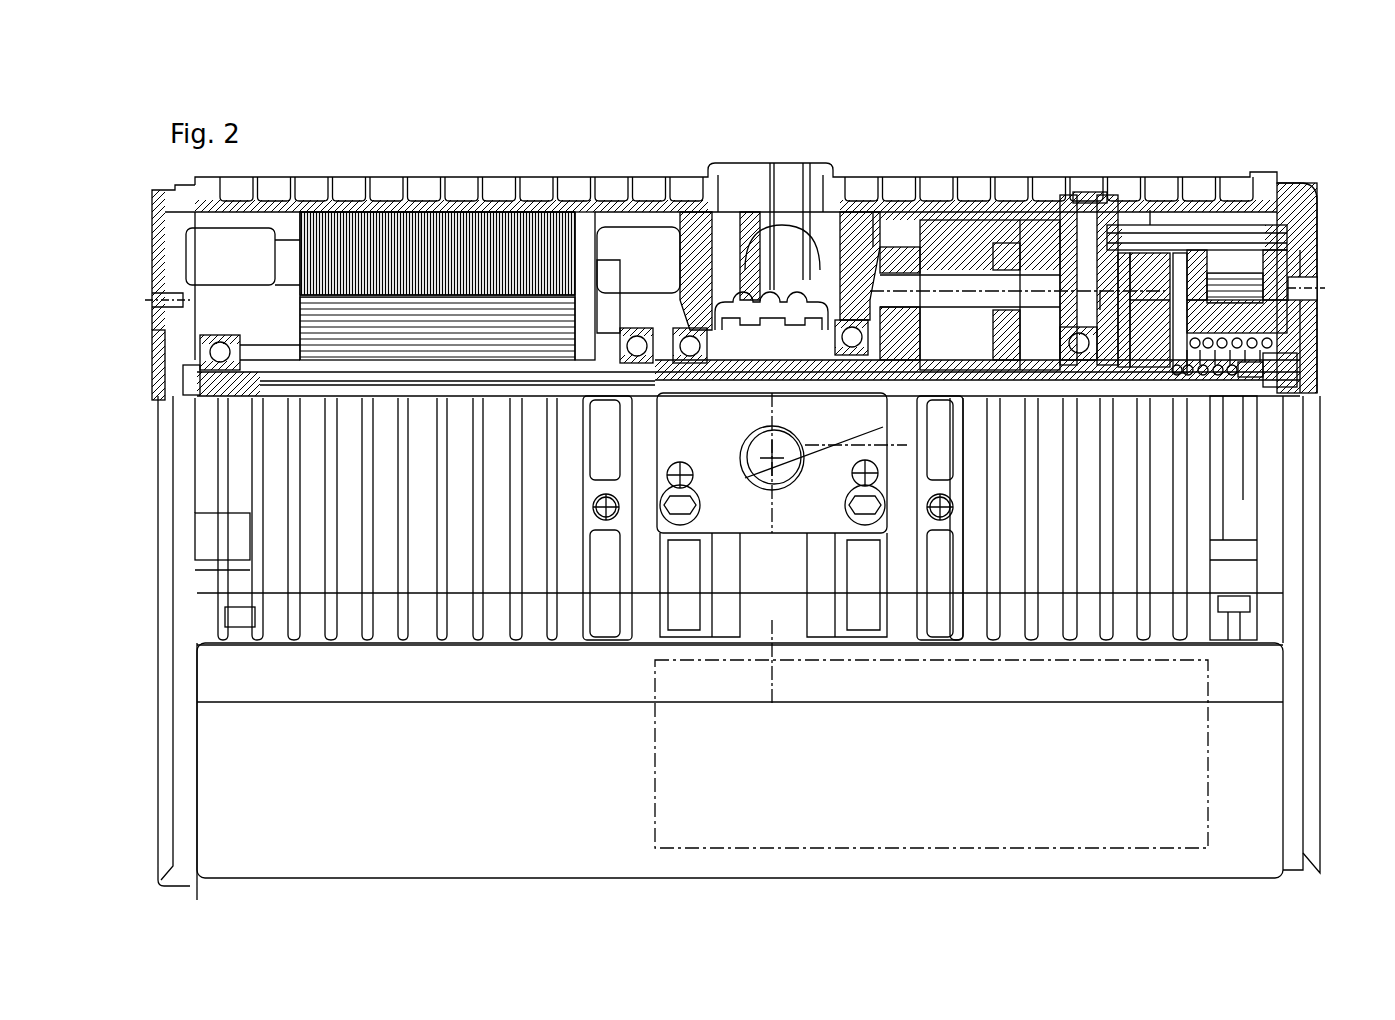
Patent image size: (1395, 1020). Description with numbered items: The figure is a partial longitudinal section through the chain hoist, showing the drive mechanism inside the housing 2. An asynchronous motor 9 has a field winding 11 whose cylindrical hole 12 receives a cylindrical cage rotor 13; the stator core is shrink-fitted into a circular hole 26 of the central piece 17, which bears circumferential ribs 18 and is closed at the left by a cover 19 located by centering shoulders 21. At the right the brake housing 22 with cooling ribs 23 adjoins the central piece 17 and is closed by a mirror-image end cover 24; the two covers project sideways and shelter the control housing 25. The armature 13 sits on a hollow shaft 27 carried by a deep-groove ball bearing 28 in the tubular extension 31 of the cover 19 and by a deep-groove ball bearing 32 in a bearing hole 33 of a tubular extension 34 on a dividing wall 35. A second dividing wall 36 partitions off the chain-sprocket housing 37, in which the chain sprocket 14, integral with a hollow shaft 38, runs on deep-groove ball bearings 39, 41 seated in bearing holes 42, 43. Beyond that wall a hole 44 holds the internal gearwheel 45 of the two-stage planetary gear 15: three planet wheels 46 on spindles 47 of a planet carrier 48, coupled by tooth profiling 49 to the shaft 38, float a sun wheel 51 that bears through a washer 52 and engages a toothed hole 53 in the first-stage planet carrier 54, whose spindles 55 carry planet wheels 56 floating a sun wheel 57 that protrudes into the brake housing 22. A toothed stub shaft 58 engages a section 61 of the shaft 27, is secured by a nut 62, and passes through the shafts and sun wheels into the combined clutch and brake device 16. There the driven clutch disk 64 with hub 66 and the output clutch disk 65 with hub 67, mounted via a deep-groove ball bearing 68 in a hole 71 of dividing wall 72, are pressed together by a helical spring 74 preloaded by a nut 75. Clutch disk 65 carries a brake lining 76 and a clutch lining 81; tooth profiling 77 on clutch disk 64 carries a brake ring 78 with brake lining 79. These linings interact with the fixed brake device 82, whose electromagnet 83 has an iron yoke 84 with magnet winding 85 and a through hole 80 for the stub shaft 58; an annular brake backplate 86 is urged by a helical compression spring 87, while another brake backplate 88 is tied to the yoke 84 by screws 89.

The housing 2 is at (455, 125).
The asynchronous motor 9 is at (566, 188).
The field winding 11 is at (400, 240).
The cylindrical hole 12 is at (540, 300).
The cage rotor 13 is at (445, 330).
The chain sprocket 14 is at (745, 373).
The two-stage planetary gear 15 is at (893, 300).
The combined clutch and brake device 16 is at (1318, 260).
The central piece 17 is at (330, 147).
The ribs 18 is at (335, 185).
The cover 19 is at (160, 540).
The centering shoulders 21 is at (210, 225).
The brake housing 22 is at (1165, 105).
The cooling ribs 23 is at (1303, 530).
The end cover 24 is at (1310, 630).
The control housing 25 is at (560, 822).
The circular hole 26 is at (520, 213).
The hollow shaft 27 is at (432, 381).
The deep-groove ball bearing 28 is at (215, 340).
The tubular extension 31 is at (165, 300).
The deep-groove ball bearing 32 is at (626, 335).
The bearing hole 33 is at (662, 335).
The tubular extension 34 is at (676, 290).
The dividing wall 35 is at (692, 240).
The dividing wall 36 is at (822, 210).
The chain-sprocket housing 37 is at (758, 280).
The hollow shaft 38 is at (720, 372).
The deep-groove ball bearing 39 is at (690, 375).
The deep-groove ball bearing 41 is at (860, 368).
The bearing hole 42 is at (735, 290).
The bearing hole 43 is at (848, 318).
The hole 44 is at (928, 230).
The internal gearwheel 45 is at (955, 260).
The planet wheels 46 is at (980, 245).
The spindles 47 is at (905, 330).
The planet carrier 48 is at (873, 240).
The tooth profiling 49 is at (850, 430).
The sun wheel 51 is at (945, 382).
The washer 52 is at (875, 380).
The hole 53 is at (1000, 378).
The planet carrier 54 is at (1015, 378).
The spindles 55 is at (1005, 330).
The planet wheels 56 is at (1017, 240).
The sun wheel 57 is at (1030, 380).
The stub shaft 58 is at (420, 400).
The section 61 is at (197, 380).
The nut 62 is at (160, 392).
The clutch disk 64 is at (1127, 375).
The clutch disk 65 is at (1085, 400).
The hub 66 is at (1160, 375).
The hub 67 is at (1060, 375).
The deep-groove ball bearing 68 is at (1062, 235).
The hole 71 is at (1108, 245).
The dividing wall 72 is at (1100, 300).
The helical spring 74 is at (1258, 398).
The nut 75 is at (1230, 376).
The brake lining 76 is at (1150, 235).
The tooth profiling 77 is at (1255, 245).
The brake ring 78 is at (1175, 240).
The brake lining 79 is at (1205, 225).
The through hole 80 is at (1275, 345).
The clutch lining 81 is at (1300, 335).
The fixed brake device 82 is at (1290, 195).
The electromagnet 83 is at (1325, 288).
The iron yoke 84 is at (1270, 315).
The magnet winding 85 is at (1240, 285).
The brake backplate 86 is at (1260, 225).
The helical compression spring 87 is at (1200, 392).
The brake backplate 88 is at (1150, 210).
The screws 89 is at (1300, 215).